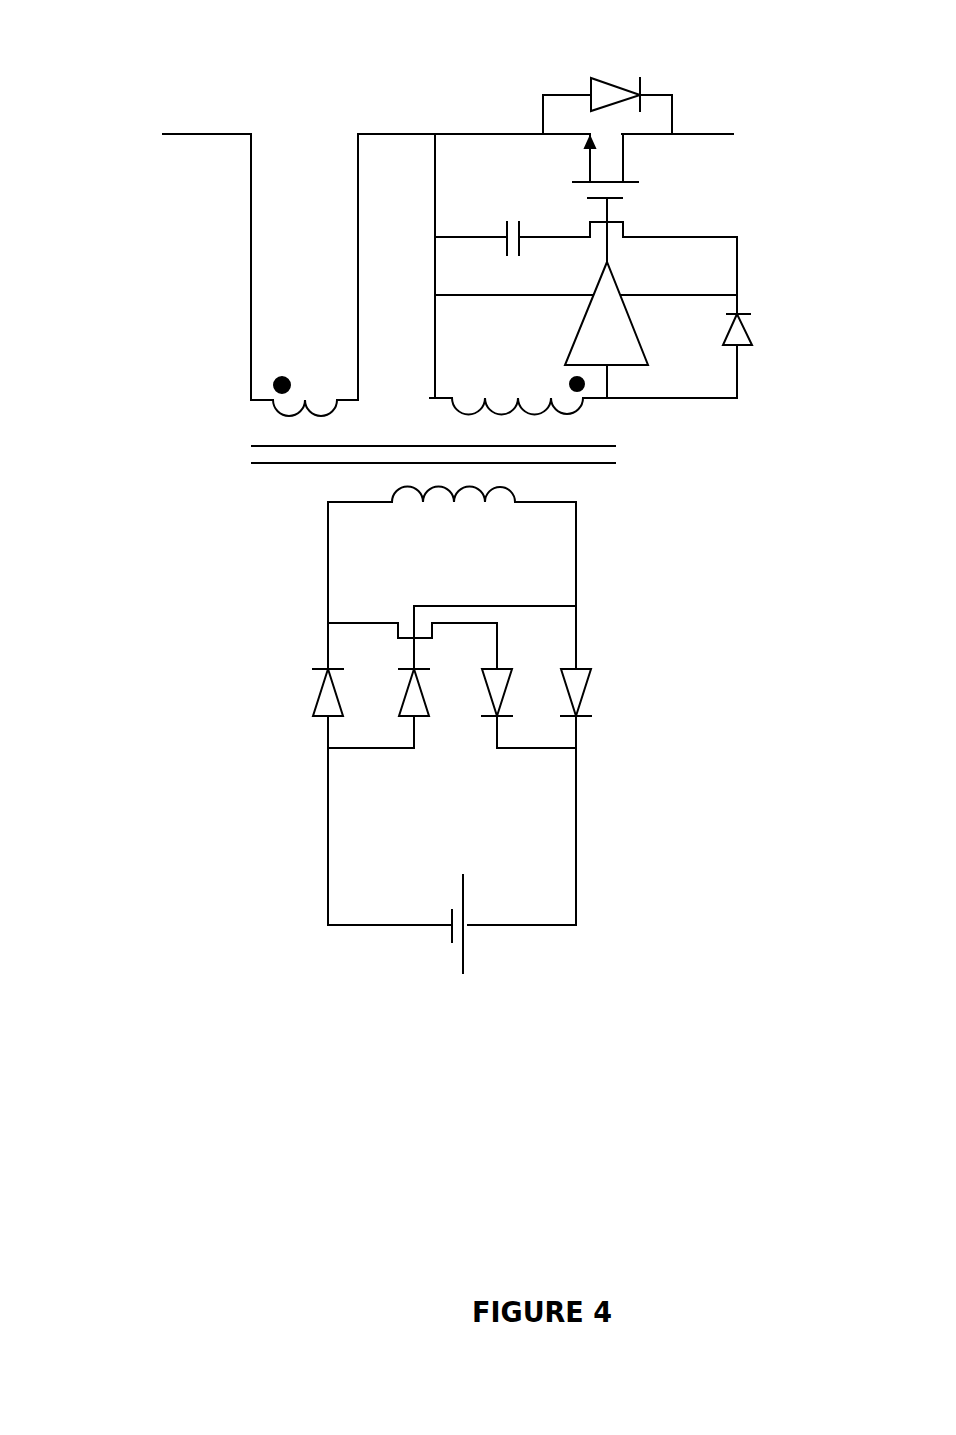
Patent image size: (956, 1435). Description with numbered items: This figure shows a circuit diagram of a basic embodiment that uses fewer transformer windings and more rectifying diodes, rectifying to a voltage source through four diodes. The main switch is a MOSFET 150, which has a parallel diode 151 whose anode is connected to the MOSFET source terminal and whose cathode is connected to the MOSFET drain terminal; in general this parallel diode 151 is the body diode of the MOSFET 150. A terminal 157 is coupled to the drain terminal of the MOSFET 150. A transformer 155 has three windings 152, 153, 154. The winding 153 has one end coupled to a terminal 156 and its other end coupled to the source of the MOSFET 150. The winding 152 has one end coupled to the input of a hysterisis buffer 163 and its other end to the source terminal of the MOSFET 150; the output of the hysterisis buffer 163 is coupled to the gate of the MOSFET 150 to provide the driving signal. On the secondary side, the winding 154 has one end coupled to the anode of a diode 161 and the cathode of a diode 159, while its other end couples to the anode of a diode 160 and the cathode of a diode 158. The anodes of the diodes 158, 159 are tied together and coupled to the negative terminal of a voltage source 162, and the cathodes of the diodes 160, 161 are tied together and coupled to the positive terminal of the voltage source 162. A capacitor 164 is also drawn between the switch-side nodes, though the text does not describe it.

The MOSFET 150 is at (653, 158).
The parallel diode 151 is at (593, 62).
The winding 152 is at (510, 393).
The winding 153 is at (327, 385).
The winding 154 is at (497, 502).
The transformer 155 is at (218, 469).
The terminal 156 is at (160, 134).
The terminal 157 is at (733, 127).
The diode 158 is at (310, 685).
The diode 159 is at (418, 718).
The diode 160 is at (503, 731).
The diode 161 is at (601, 684).
The voltage source 162 is at (760, 342).
The hysterisis buffer 163 is at (640, 327).
The capacitor 164 is at (513, 213).